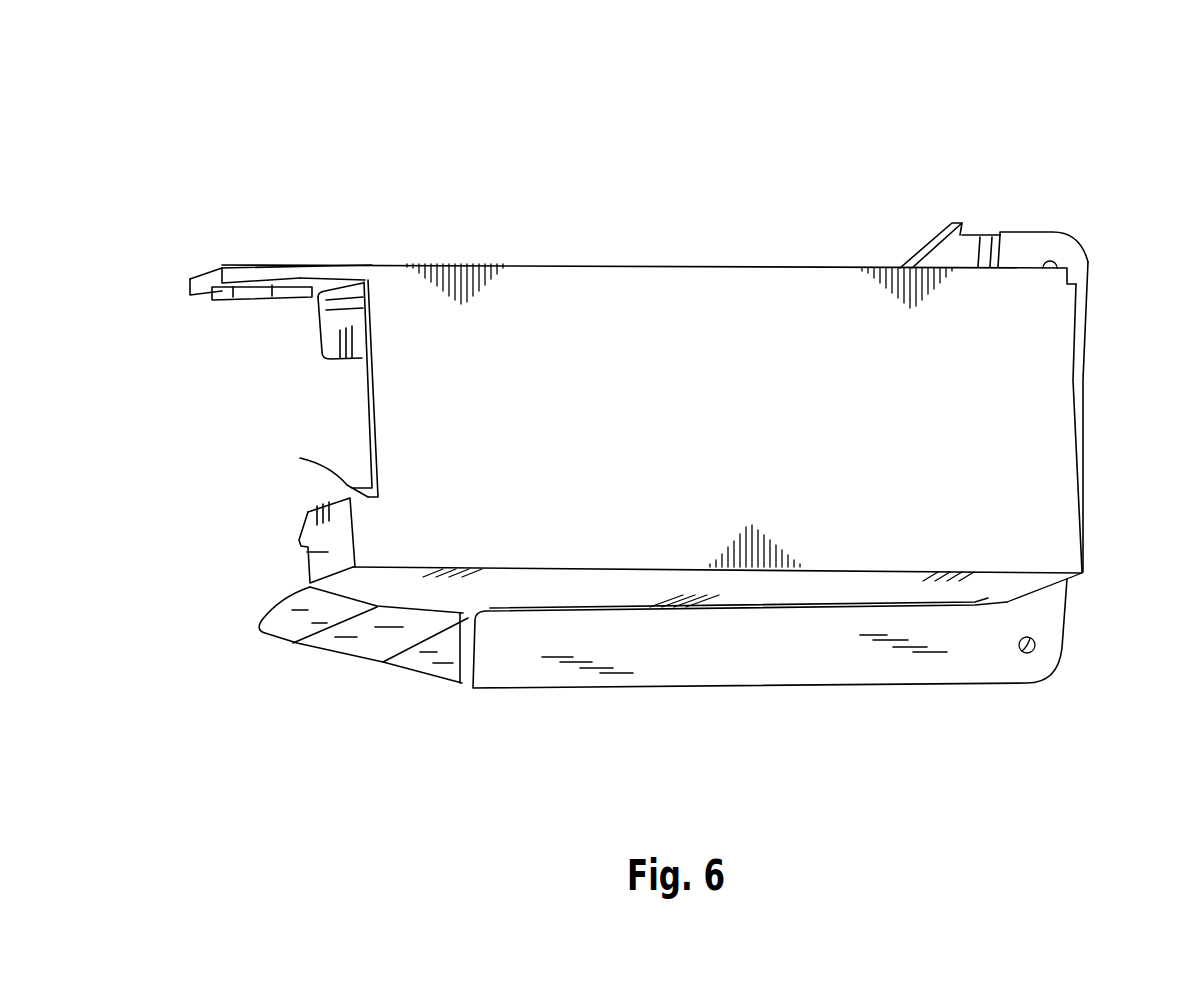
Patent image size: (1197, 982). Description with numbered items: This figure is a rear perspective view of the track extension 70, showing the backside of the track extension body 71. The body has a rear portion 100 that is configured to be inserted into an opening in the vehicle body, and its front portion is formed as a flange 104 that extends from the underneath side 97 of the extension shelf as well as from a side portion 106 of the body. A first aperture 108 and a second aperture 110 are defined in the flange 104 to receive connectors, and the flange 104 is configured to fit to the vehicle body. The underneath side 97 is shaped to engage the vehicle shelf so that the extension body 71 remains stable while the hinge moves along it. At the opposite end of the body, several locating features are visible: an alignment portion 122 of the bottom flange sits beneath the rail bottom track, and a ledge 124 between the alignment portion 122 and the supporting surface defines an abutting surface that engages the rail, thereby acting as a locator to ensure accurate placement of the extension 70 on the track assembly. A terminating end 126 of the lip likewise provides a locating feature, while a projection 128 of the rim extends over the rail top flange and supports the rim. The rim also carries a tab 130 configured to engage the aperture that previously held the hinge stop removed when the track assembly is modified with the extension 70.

The track extension 70 is at (646, 145).
The track extension body 71 is at (815, 245).
The underneath side 97 is at (528, 588).
The rear portion 100 is at (547, 280).
The flange 104 is at (1023, 250).
The side portion 106 is at (1017, 405).
The first aperture 108 is at (1062, 252).
The second aperture 110 is at (1038, 642).
The alignment portion 122 is at (310, 552).
The ledge 124 is at (347, 485).
The terminating end 126 is at (320, 340).
The projection 128 is at (280, 268).
The tab 130 is at (235, 304).